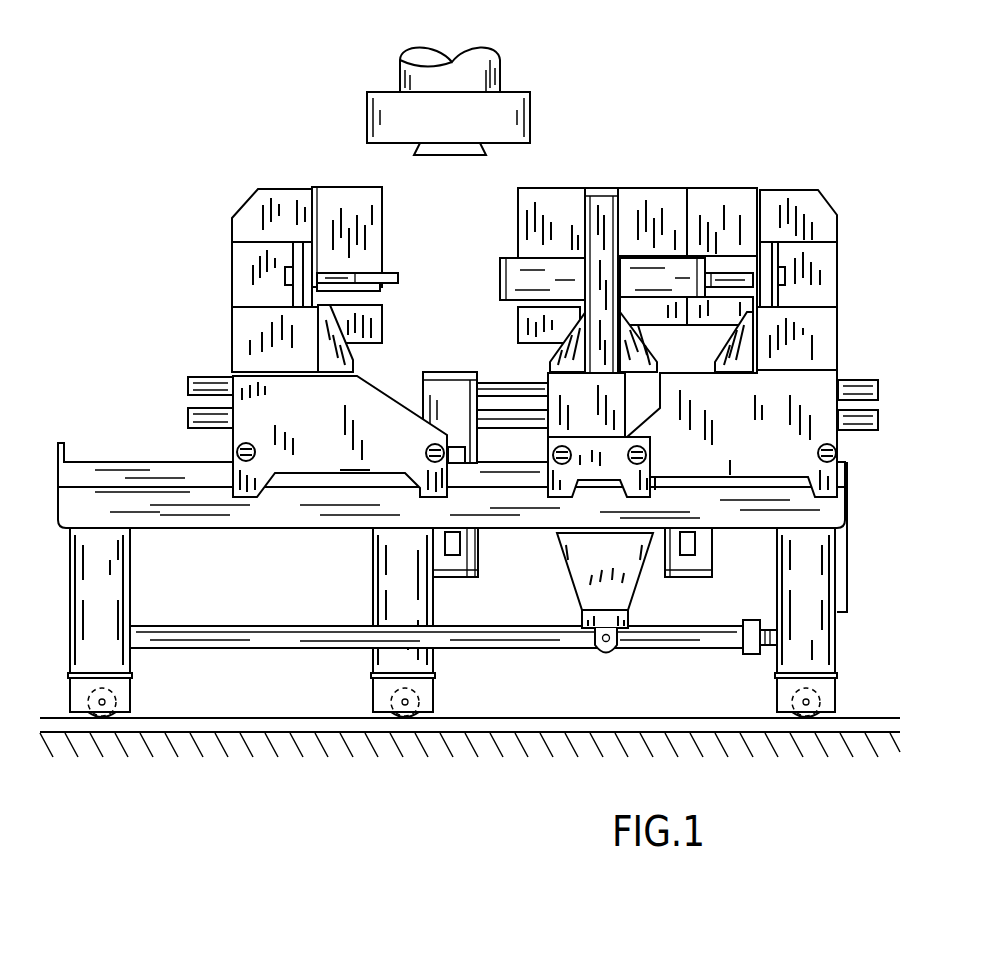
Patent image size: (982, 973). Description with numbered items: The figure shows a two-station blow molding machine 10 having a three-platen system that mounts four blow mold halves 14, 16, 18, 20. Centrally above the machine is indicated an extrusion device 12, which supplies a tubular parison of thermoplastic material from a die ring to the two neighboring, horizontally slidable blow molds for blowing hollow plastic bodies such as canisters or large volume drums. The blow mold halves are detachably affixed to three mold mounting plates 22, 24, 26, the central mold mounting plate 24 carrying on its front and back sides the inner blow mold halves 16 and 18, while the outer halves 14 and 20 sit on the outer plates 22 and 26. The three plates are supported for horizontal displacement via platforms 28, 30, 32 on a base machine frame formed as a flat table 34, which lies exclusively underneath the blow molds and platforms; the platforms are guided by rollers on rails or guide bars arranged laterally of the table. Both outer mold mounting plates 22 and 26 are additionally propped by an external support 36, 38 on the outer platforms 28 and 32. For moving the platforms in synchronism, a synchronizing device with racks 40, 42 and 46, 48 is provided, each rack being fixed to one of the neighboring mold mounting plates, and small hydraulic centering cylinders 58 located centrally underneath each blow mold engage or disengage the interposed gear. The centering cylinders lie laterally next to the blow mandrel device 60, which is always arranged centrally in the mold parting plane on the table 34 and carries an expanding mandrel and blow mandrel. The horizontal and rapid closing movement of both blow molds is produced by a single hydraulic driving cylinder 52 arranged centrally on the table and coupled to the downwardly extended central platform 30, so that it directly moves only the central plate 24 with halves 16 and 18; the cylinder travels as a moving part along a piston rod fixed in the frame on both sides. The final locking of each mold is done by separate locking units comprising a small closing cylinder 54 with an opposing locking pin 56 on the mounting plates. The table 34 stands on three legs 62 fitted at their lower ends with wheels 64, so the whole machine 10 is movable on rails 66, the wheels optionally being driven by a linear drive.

The two-station blow molding machine 10 is at (204, 162).
The extrusion device 12 is at (490, 63).
The blow mold half 14 is at (337, 203).
The blow mold half 16 is at (562, 190).
The blow mold half 18 is at (663, 190).
The blow mold half 20 is at (725, 190).
The mold mounting plate 22 is at (232, 226).
The central mold mounting plate 24 is at (604, 190).
The mold mounting plate 26 is at (760, 222).
The platform 28 is at (303, 455).
The central platform 30 is at (552, 392).
The platform 32 is at (762, 452).
The table 34 is at (133, 505).
The external support 36 is at (247, 333).
The external support 38 is at (818, 333).
The rack 40 is at (862, 388).
The rack 42 is at (862, 425).
The rack 46 is at (210, 380).
The rack 48 is at (205, 420).
The hydraulic driving cylinder 52 is at (653, 640).
The closing cylinder 54 is at (543, 268).
The locking pin 56 is at (370, 278).
The hydraulic centering cylinder 58 is at (470, 540).
The blow mandrel device 60 is at (460, 578).
The leg 62 is at (372, 653).
The wheel 64 is at (108, 720).
The rail 66 is at (226, 732).